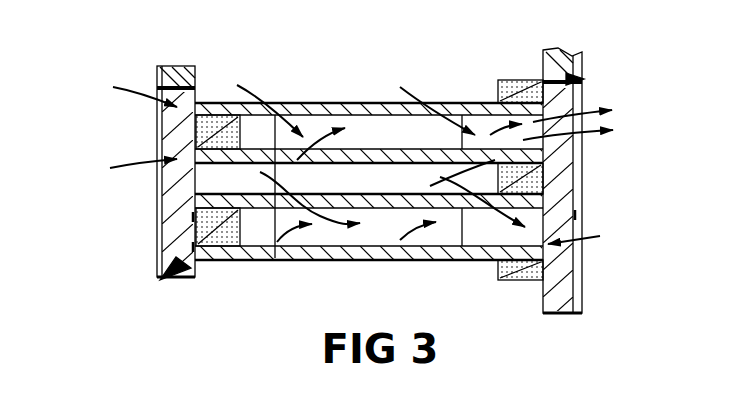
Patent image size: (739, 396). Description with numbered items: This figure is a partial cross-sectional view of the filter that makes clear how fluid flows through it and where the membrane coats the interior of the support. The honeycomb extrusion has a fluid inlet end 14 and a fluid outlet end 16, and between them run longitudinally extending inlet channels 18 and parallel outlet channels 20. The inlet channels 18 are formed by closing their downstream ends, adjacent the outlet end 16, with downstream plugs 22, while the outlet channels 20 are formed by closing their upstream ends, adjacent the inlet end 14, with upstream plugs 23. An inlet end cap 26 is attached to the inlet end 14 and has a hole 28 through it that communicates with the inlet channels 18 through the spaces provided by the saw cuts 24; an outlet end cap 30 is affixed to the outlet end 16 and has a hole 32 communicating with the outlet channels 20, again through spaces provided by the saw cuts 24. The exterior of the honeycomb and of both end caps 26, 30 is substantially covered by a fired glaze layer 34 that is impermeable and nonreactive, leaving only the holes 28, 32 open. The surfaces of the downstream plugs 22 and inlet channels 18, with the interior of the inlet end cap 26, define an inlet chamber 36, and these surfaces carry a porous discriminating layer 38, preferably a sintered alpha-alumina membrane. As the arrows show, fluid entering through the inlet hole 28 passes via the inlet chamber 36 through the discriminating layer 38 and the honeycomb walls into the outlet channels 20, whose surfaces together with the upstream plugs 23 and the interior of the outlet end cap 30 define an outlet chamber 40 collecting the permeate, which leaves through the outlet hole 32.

The fluid inlet end 14 is at (158, 288).
The fluid outlet end 16 is at (575, 237).
The inlet channels 18 is at (228, 262).
The outlet channels 20 is at (310, 135).
The downstream plugs 22 is at (520, 80).
The upstream plugs 23 is at (197, 135).
The saw cuts 24 is at (252, 162).
The inlet end cap 26 is at (162, 250).
The inlet hole 28 is at (160, 90).
The outlet end cap 30 is at (557, 302).
The outlet hole 32 is at (585, 82).
The fired glaze layer 34 is at (170, 217).
The inlet chamber 36 is at (170, 247).
The porous discriminating layer 38 is at (195, 147).
The outlet chamber 40 is at (540, 142).